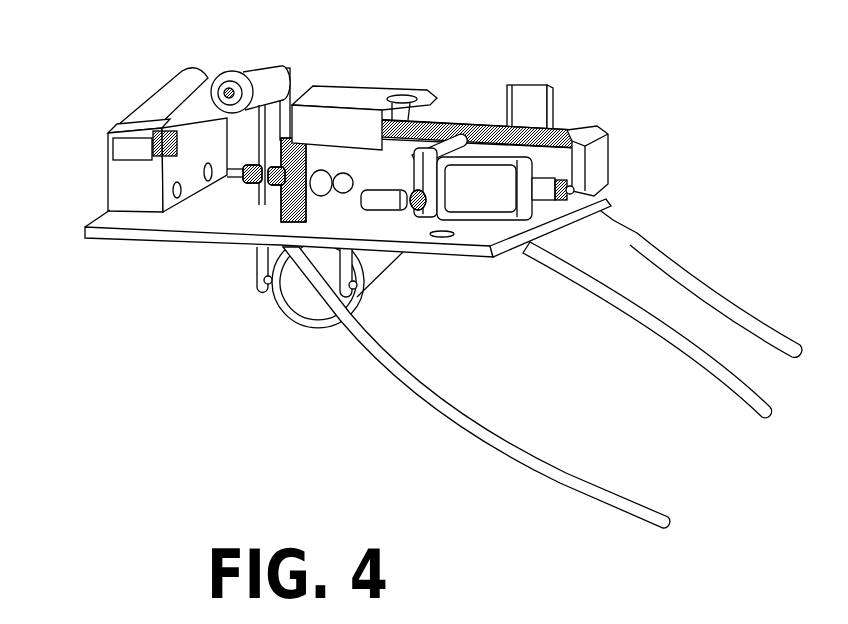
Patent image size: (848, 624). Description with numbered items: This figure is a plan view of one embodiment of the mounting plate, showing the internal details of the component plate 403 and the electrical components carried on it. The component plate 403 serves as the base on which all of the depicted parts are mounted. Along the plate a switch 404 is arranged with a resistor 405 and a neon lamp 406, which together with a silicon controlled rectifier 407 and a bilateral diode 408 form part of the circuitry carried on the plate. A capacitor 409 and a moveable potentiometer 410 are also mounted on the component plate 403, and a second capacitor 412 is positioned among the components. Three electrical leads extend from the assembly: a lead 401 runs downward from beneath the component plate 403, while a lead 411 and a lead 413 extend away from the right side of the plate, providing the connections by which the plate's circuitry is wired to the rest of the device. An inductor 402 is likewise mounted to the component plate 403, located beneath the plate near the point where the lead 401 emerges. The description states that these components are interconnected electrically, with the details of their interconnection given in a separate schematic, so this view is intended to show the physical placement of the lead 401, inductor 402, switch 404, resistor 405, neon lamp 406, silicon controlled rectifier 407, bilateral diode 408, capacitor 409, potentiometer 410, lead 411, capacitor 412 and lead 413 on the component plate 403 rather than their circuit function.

The lead 401 is at (373, 358).
The inductor 402 is at (279, 305).
The component plate 403 is at (101, 236).
The switch 404 is at (134, 101).
The resistor 405 is at (208, 70).
The neon lamp 406 is at (259, 163).
The silicon controlled rectifier 407 is at (314, 86).
The bilateral diode 408 is at (388, 190).
The capacitor 409 is at (462, 118).
The moveable potentiometer 410 is at (570, 125).
The lead 411 is at (618, 212).
The capacitor 412 is at (523, 190).
The lead 413 is at (606, 303).